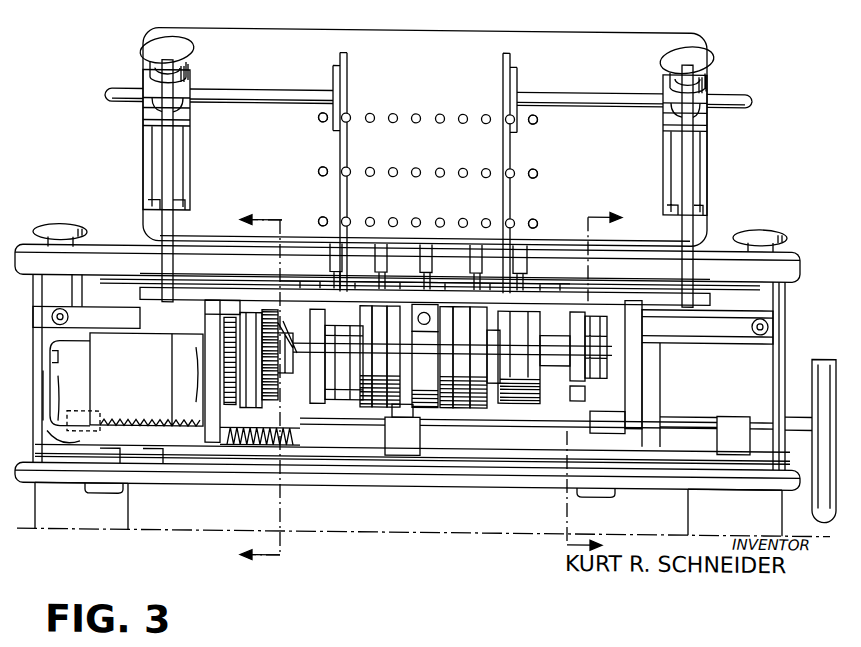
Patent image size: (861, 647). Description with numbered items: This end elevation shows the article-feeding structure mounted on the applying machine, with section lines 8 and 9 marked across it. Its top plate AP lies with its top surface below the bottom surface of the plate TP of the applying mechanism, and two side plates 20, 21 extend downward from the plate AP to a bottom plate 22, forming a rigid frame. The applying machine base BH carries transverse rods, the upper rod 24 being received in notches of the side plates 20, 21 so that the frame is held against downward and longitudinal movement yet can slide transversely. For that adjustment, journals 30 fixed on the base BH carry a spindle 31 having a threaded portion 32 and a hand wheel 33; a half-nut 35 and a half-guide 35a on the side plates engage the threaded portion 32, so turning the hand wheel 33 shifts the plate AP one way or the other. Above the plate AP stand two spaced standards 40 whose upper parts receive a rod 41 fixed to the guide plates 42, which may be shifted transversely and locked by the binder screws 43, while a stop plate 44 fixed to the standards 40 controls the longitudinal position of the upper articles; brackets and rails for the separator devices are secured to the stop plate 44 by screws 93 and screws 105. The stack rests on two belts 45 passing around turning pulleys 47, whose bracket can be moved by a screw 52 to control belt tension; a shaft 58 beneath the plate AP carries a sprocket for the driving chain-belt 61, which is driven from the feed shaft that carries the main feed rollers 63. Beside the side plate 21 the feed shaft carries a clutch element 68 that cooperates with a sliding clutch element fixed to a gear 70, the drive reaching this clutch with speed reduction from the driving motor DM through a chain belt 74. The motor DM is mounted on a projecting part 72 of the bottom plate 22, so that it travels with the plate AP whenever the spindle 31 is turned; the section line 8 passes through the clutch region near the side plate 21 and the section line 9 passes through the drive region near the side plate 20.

The stop plate 44 is at (234, 42).
The binder screws 43 is at (152, 51).
The rod 41 is at (110, 102).
The standards 40 is at (152, 144).
The screws 93 is at (319, 116).
The guide plates 42 is at (338, 140).
The screws 105 is at (326, 216).
The section line 8 is at (250, 391).
The section line 9 is at (608, 376).
The plate of the applying mechanism TP is at (718, 255).
The applying machine base BH is at (790, 292).
The hand wheel 33 is at (828, 354).
The gear 70 is at (227, 305).
The side plate 21 is at (213, 338).
The driving motor DM is at (123, 398).
The chain belt 74 is at (233, 380).
The clutch element 68 is at (287, 370).
The belts 45 is at (385, 391).
The screw 52 is at (428, 312).
The main feed rollers 63 is at (513, 395).
The shaft 58 is at (565, 351).
The driving chain-belt 61 is at (572, 391).
The side plate 20 is at (633, 372).
The upper rod 24 is at (715, 321).
The top plate AP is at (648, 294).
The half-guide 35a is at (600, 419).
The spindle 31 is at (697, 416).
The journals 30 is at (743, 415).
The turning pulleys 47 is at (477, 396).
The half-nut 35 is at (283, 430).
The threaded portion 32 is at (333, 437).
The bottom plate 22 is at (523, 465).
The projecting part 72 is at (155, 468).